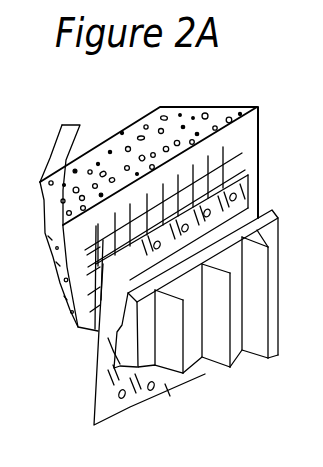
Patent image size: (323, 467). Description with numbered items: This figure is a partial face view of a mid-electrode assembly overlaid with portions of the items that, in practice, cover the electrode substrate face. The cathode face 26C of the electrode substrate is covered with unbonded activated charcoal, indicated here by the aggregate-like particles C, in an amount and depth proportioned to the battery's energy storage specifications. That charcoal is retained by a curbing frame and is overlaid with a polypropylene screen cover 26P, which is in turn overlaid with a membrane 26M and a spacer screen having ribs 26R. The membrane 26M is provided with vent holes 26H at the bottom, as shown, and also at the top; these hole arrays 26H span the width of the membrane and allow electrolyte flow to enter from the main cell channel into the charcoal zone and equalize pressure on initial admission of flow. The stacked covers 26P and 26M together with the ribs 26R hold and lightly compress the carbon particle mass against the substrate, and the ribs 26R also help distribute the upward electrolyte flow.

The cathode face 26C is at (105, 130).
The concrete C is at (199, 128).
The membrane 26M is at (244, 208).
The polypropylene screen cover 26P is at (233, 161).
The vent holes 26H is at (152, 390).
The ribs 26R is at (231, 369).